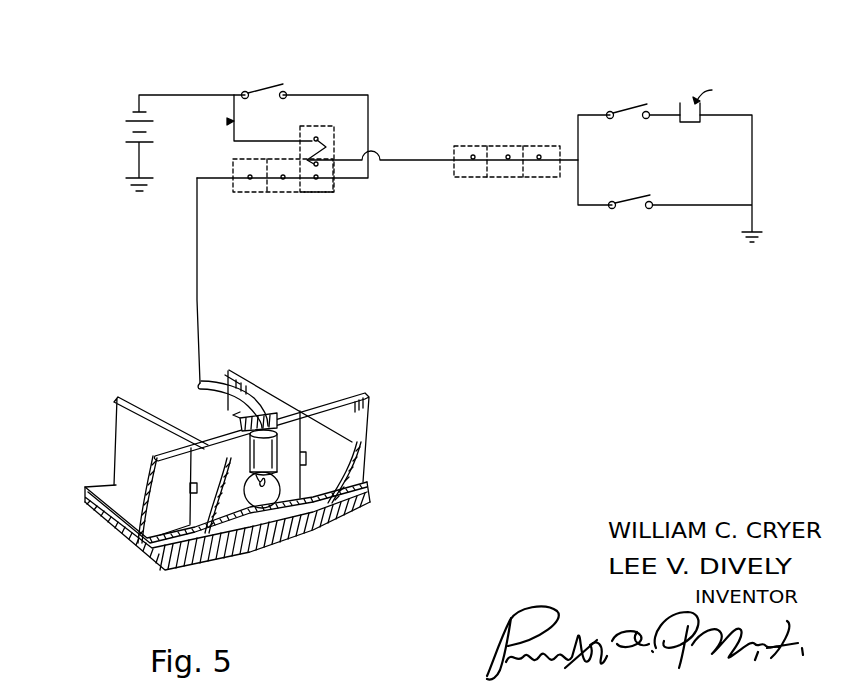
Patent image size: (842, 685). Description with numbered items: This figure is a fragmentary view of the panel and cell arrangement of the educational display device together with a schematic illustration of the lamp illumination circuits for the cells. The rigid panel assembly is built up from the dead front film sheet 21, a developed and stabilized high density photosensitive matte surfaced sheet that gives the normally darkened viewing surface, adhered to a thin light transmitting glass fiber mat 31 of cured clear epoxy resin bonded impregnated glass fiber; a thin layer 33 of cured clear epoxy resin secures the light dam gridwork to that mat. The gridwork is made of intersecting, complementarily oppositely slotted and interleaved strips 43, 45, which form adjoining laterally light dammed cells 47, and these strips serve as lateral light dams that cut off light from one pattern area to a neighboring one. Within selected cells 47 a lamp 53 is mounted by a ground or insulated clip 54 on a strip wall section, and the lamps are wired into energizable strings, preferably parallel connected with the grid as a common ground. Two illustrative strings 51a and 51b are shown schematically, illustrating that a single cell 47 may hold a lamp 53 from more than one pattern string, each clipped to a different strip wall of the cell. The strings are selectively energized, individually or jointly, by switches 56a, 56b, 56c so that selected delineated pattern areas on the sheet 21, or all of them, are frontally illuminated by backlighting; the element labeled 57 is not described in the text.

The dead front film sheet 21 is at (162, 548).
The glass fiber mat 31 is at (87, 497).
The layer of cured clear epoxy resin 33 is at (97, 490).
The strip 43 is at (162, 394).
The strip 45 is at (356, 402).
The cell 47 is at (312, 128).
The string 51a is at (198, 325).
The string 51b is at (229, 122).
The lamp 53 is at (473, 152).
The clip 54 is at (233, 415).
The switch 56a is at (264, 89).
The switch 56b is at (623, 111).
The switch 56c is at (628, 208).
The flasher 57 is at (690, 125).